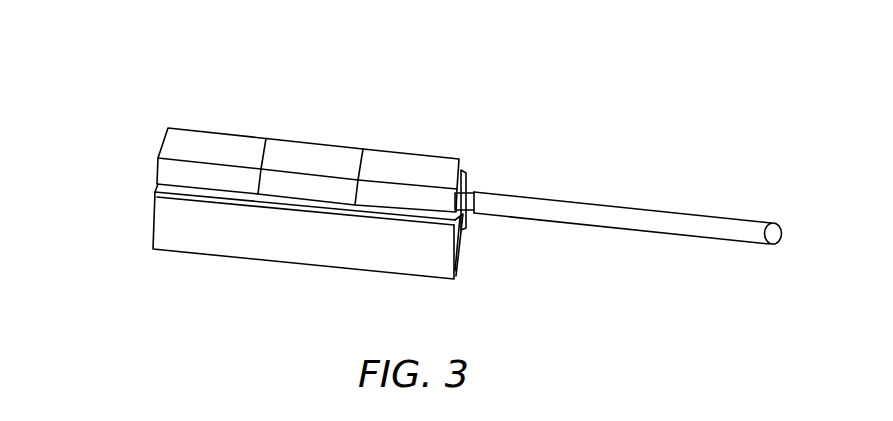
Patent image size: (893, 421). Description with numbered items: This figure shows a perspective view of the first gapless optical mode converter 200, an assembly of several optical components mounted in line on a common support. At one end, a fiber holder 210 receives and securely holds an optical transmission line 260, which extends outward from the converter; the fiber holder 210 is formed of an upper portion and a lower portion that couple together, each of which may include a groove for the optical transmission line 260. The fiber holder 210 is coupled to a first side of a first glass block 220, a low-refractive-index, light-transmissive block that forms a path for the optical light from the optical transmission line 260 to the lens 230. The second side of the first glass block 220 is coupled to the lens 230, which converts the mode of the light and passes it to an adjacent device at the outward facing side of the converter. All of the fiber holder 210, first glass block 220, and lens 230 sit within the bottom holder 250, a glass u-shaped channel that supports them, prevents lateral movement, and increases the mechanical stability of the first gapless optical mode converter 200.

The first gapless optical mode converter 200 is at (82, 50).
The fiber holder 210 is at (415, 154).
The first glass block 220 is at (307, 142).
The lens 230 is at (196, 131).
The bottom holder 250 is at (458, 274).
The optical transmission line 260 is at (517, 194).